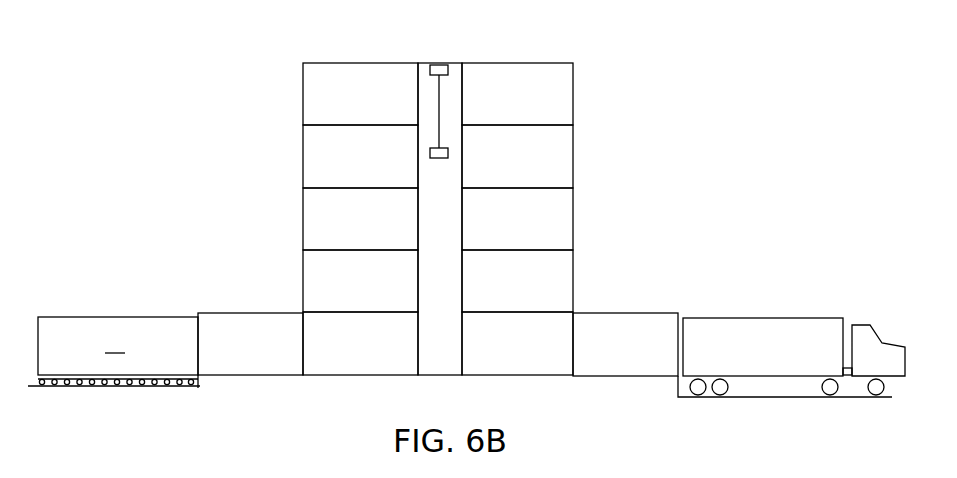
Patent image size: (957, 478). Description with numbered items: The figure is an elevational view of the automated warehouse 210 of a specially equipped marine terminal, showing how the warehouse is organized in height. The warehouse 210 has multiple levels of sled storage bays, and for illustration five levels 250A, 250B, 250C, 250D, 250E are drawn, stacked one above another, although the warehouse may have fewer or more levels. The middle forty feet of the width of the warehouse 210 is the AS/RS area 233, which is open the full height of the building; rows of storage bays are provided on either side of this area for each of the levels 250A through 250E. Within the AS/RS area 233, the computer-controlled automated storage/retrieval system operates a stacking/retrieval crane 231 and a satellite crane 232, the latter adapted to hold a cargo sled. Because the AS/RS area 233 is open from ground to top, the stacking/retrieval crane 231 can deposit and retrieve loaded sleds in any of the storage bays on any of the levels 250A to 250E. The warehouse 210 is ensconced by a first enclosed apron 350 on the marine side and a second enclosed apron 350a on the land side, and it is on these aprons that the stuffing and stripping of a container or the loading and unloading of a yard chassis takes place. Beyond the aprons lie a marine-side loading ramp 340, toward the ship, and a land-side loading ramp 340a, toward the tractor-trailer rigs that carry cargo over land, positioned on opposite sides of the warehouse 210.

The automated warehouse 210 is at (607, 118).
The stacking/retrieval crane 231 is at (441, 65).
The satellite crane 232 is at (445, 158).
The AS/RS area 233 is at (460, 285).
The level 250A is at (438, 343).
The level 250B is at (438, 281).
The level 250C is at (438, 219).
The level 250D is at (438, 156).
The level 250E is at (438, 94).
The marine-side loading ramp 340 is at (188, 388).
The land-side loading ramp 340a is at (690, 400).
The first enclosed apron 350 is at (250, 344).
The second enclosed apron 350a is at (625, 344).